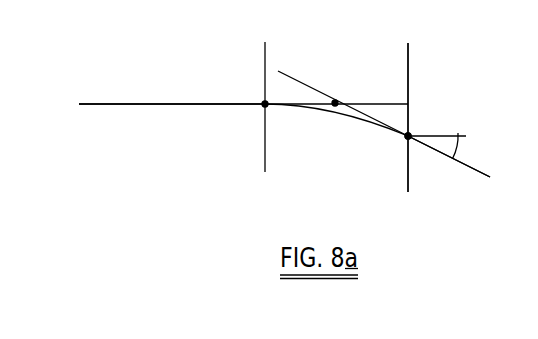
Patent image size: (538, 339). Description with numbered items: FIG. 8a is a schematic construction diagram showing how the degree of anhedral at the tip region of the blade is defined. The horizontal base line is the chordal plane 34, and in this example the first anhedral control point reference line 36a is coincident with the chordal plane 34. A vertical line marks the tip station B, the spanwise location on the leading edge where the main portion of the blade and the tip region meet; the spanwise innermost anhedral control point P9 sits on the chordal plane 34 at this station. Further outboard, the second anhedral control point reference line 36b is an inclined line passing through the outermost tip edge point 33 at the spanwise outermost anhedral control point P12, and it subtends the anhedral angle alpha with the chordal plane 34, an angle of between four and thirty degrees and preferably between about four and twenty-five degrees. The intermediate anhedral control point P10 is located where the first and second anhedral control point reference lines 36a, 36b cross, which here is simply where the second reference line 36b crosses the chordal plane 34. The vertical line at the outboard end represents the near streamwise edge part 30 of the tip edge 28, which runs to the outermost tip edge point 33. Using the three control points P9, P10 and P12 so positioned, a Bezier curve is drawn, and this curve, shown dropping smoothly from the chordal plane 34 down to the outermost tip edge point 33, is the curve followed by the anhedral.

The chordal plane 34 is at (127, 104).
The first anhedral control point reference line 36a is at (172, 104).
The tip station B- B is at (265, 111).
The spanwise innermost anhedral control point P9 is at (263, 106).
The anhedral control point P10 is at (336, 101).
The spanwise outermost anhedral control point P12 is at (410, 140).
The near streamwise edge part 30 is at (408, 70).
The tip edge 28 is at (408, 70).
The outermost tip edge point 33 is at (406, 139).
The second anhedral control point reference line 36b is at (472, 170).